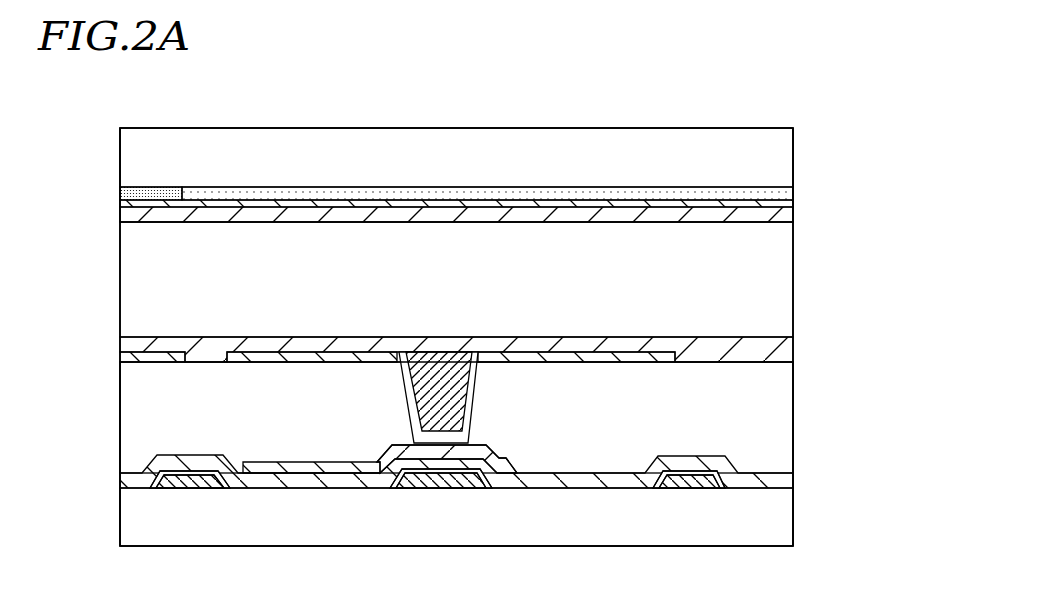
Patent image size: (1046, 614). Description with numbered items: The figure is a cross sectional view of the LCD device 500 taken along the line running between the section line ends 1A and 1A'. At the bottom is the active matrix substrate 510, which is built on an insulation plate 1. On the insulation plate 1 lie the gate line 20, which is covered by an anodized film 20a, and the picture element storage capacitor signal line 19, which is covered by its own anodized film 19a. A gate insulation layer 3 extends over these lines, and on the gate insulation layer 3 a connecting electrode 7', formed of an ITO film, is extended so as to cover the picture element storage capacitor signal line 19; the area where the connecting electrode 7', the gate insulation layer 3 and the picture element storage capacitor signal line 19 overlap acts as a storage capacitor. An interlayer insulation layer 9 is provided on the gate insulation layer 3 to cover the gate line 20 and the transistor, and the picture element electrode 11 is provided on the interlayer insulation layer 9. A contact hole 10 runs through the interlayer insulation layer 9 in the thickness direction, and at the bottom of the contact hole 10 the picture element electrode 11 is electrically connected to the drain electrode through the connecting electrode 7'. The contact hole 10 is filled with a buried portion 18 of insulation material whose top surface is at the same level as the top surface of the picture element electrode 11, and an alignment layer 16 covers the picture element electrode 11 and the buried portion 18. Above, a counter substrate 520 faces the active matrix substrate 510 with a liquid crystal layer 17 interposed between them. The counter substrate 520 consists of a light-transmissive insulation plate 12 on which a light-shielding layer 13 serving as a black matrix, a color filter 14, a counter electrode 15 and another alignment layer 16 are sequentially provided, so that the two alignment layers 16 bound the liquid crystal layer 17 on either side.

The LCD device 500 is at (750, 53).
The counter substrate 520 is at (828, 128).
The active matrix substrate 510 is at (828, 548).
The light-transmissive insulation plate 12 is at (578, 157).
The light-shielding layer 13 is at (160, 190).
The counter electrode 15 is at (272, 203).
The color filter 14 is at (345, 212).
The alignment layer 16 is at (778, 350).
The liquid crystal layer 17 is at (140, 267).
The picture element electrode 11 is at (632, 358).
The interlayer insulation layer 9 is at (140, 418).
The buried portion 18 is at (450, 350).
The gate insulation layer 3 is at (277, 488).
The connecting electrode 7' is at (380, 522).
The contact hole 10 is at (500, 383).
The gate line 20 is at (192, 490).
The anodized film 20a is at (227, 488).
The picture element storage capacitor signal line 19 is at (450, 488).
The anodized film 19a is at (488, 488).
The insulation plate 1 is at (777, 523).
The section line end 1A is at (807, 325).
The section line end 1A' is at (101, 325).